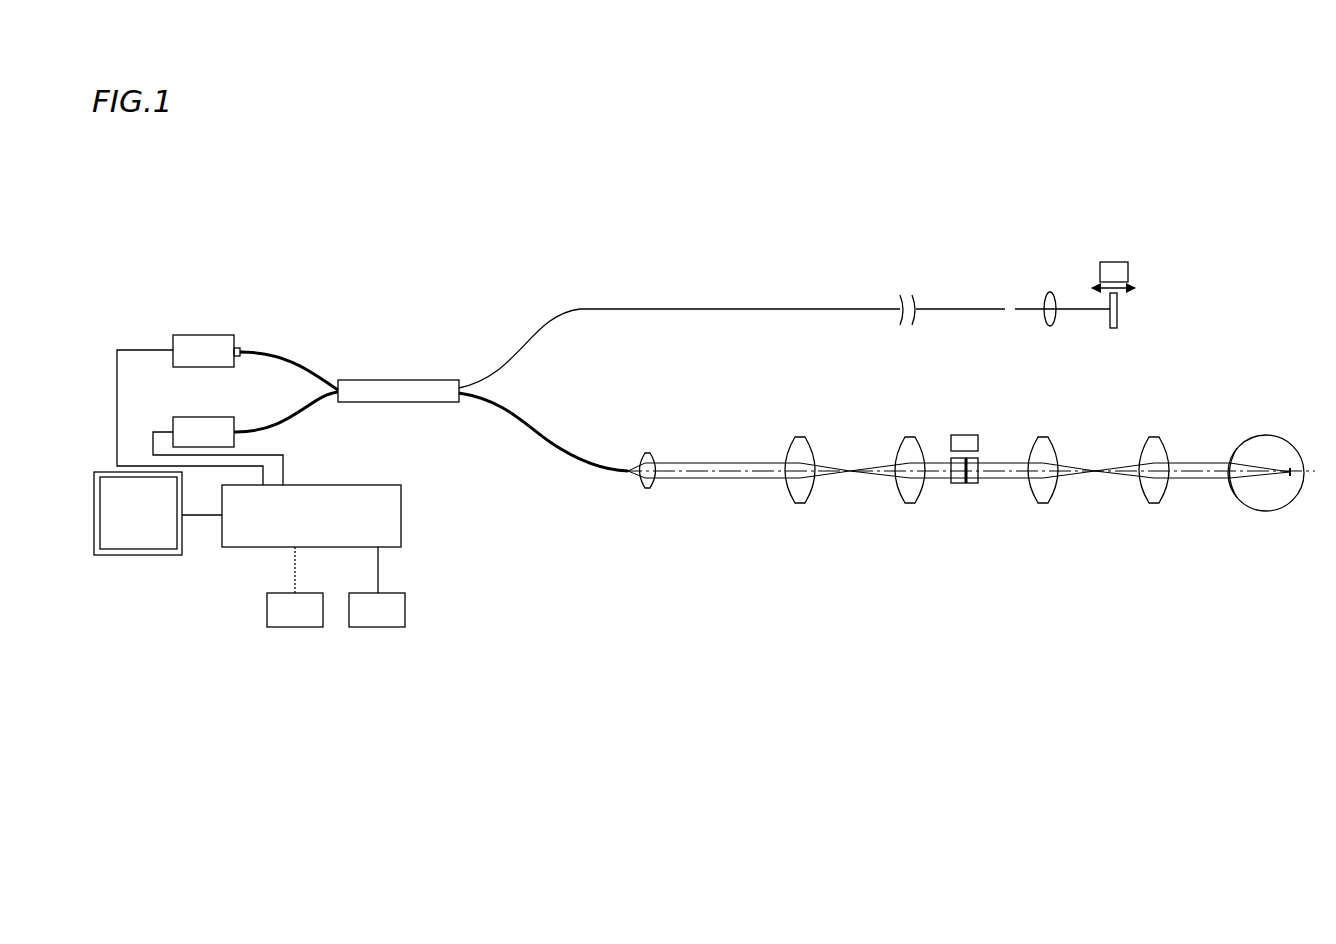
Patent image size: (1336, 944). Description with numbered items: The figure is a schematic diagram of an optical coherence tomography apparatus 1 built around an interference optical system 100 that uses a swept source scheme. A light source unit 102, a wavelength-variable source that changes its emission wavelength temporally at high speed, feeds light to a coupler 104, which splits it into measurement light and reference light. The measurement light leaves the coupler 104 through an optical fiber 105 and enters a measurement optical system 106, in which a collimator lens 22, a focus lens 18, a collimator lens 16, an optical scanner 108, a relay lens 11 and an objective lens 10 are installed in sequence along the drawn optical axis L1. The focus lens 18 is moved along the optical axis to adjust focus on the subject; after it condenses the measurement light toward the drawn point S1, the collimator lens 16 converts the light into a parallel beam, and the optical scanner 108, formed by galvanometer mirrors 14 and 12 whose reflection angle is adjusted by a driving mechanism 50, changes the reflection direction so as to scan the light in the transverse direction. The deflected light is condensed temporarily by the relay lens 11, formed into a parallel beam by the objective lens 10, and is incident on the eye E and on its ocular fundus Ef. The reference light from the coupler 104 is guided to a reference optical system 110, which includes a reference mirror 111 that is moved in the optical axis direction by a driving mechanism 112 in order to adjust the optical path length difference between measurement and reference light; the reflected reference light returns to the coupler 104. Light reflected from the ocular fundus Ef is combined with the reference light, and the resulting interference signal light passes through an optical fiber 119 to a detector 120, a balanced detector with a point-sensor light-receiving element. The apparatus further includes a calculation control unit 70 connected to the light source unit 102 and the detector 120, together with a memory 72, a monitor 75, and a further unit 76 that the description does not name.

The optical coherence tomography apparatus 1 is at (676, 610).
The objective lens 10 is at (1155, 497).
The relay lens 11 is at (1042, 495).
The galvanometer mirror 12 is at (975, 483).
The galvanometer mirror 14 is at (955, 483).
The collimator lens 16 is at (905, 493).
The focus lens 18 is at (813, 490).
The collimator lens 22 is at (645, 488).
The driving mechanism 50 is at (968, 440).
The calculation control unit 70 is at (363, 485).
The memory 72 is at (390, 627).
The monitor 75 is at (112, 555).
The operation unit 76 is at (303, 627).
The interference optical system 100 is at (325, 330).
The light source unit 102 is at (220, 428).
The coupler 104 is at (410, 402).
The optical fiber 105 is at (547, 440).
The measurement optical system 106 is at (1105, 410).
The optical scanner 108 is at (983, 452).
The reference optical system 110 is at (1085, 283).
The reference mirror 111 is at (1117, 312).
The driving mechanism 112 is at (1122, 272).
The optical fiber 119 is at (320, 363).
The detector 120 is at (220, 338).
The eye E is at (1290, 430).
The ocular fundus Ef is at (1293, 500).
The optical axis L1 is at (778, 478).
The focal point S1 is at (852, 472).